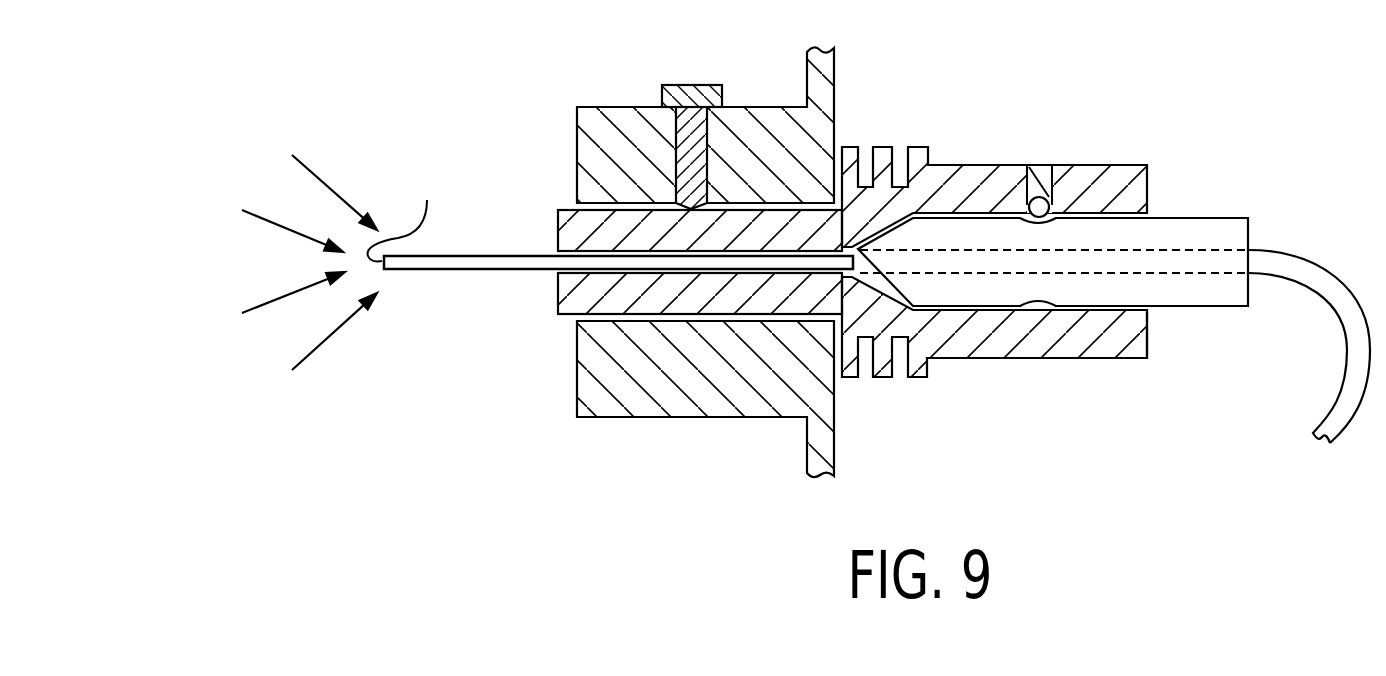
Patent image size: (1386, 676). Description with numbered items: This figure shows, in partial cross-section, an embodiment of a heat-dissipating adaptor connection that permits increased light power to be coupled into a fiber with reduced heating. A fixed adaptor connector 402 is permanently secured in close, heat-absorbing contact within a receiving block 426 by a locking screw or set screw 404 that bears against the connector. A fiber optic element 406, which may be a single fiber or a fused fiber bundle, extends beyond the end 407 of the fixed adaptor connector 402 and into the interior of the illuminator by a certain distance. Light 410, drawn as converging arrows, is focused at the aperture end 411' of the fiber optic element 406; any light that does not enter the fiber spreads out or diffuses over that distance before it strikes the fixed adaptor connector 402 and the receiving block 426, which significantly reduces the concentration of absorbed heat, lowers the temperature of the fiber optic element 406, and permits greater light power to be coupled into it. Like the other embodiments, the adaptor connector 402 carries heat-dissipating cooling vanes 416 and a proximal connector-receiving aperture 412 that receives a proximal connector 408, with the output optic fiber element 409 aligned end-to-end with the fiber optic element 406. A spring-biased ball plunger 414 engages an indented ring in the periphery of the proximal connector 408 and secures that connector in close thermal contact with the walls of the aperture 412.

The fixed adaptor connector 402 is at (930, 182).
The set screw 404 is at (682, 158).
The fiber optic element 406 is at (530, 260).
The end of the fixed adaptor connector 407 is at (561, 236).
The proximal connector 408 is at (1210, 232).
The output optic fiber element 409 is at (1330, 292).
The light 410 is at (172, 135).
The aperture end 411' is at (411, 207).
The proximal connector-receiving aperture 412 is at (1150, 311).
The spring-biased ball plunger 414 is at (1044, 205).
The heat-dissipating cooling vanes 416 is at (927, 388).
The receiving block 426 is at (623, 387).